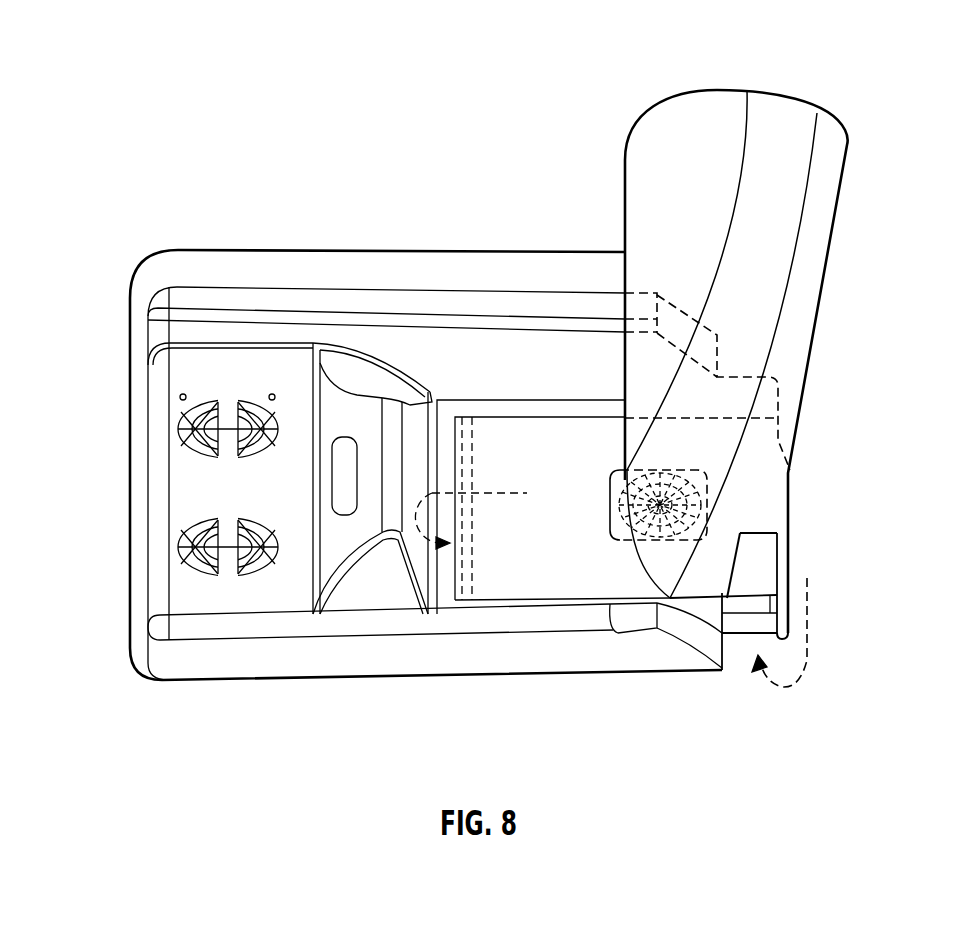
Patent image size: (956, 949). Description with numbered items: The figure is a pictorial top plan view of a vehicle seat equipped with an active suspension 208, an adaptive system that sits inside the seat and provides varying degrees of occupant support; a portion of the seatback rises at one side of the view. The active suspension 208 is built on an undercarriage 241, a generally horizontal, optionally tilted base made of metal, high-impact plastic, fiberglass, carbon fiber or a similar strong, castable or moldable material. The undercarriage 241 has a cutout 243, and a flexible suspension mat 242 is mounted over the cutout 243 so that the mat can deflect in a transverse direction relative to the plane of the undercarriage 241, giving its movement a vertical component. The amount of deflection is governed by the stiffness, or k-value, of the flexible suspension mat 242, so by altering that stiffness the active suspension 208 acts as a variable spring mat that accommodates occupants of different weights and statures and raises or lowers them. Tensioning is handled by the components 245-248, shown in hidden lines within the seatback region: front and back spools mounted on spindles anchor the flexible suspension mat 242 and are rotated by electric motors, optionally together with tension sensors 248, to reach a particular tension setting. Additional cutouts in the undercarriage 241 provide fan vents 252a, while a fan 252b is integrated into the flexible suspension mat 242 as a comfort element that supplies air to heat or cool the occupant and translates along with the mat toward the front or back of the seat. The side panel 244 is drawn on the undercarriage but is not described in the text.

The active suspension 208 is at (486, 56).
The undercarriage 241 is at (256, 698).
The flexible suspension mat 242 is at (493, 553).
The cutout 243 is at (557, 410).
The side panel 244 is at (283, 370).
The tension sensors 248 is at (218, 305).
The spools, spindles, electric motors and tension sensors 245-248 is at (472, 427).
The fan vents 252a is at (205, 430).
The fan 252b is at (620, 490).